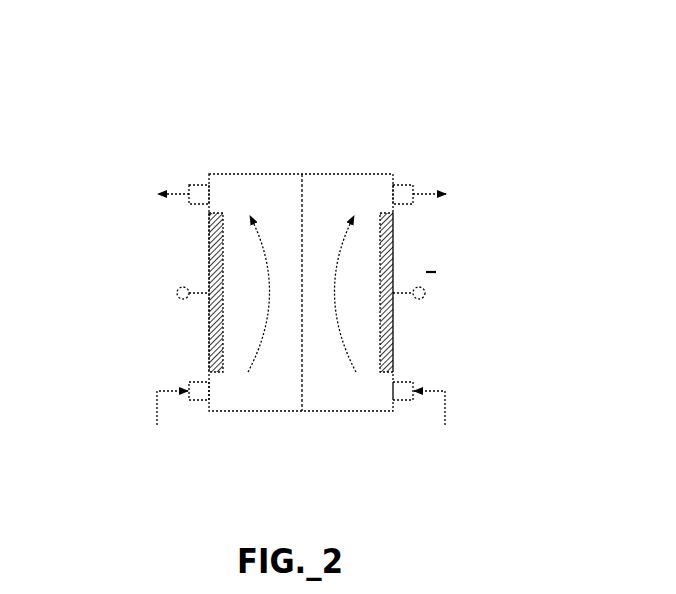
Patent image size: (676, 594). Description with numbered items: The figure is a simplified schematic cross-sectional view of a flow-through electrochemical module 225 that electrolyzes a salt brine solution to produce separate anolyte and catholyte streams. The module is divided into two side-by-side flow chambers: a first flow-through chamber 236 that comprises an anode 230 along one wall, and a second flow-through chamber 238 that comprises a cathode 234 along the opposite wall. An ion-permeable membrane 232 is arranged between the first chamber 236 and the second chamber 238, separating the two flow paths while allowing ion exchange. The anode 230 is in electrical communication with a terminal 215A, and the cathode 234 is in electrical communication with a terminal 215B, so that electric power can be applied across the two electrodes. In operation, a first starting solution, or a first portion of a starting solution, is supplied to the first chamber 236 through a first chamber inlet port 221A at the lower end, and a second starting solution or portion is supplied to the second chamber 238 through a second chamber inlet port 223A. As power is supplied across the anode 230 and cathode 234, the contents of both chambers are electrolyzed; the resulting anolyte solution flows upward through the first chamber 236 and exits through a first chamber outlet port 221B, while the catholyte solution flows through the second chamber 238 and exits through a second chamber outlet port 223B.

The flow-through electrochemical module 225 is at (118, 92).
The anode 230 is at (207, 251).
The cathode 234 is at (396, 251).
The membrane 232 is at (302, 382).
The first flow-through chamber 236 is at (256, 192).
The second flow-through chamber 238 is at (341, 192).
The first chamber inlet port 221A is at (194, 382).
The first chamber outlet port 221B is at (194, 185).
The second chamber inlet port 223A is at (408, 382).
The second chamber outlet port 223B is at (408, 184).
The terminal 215A is at (178, 297).
The terminal 215B is at (424, 297).